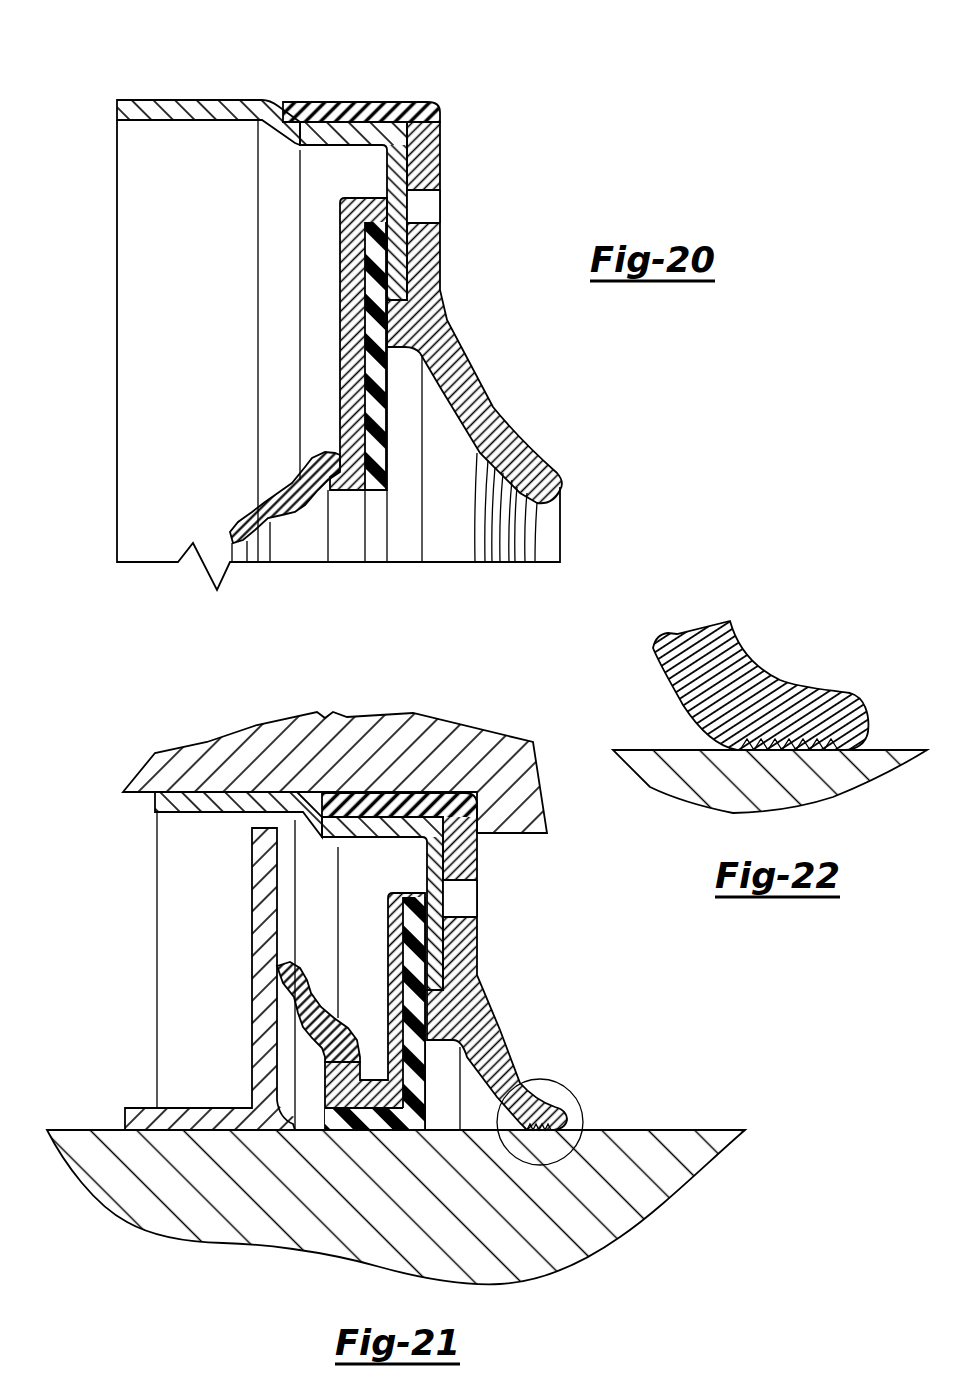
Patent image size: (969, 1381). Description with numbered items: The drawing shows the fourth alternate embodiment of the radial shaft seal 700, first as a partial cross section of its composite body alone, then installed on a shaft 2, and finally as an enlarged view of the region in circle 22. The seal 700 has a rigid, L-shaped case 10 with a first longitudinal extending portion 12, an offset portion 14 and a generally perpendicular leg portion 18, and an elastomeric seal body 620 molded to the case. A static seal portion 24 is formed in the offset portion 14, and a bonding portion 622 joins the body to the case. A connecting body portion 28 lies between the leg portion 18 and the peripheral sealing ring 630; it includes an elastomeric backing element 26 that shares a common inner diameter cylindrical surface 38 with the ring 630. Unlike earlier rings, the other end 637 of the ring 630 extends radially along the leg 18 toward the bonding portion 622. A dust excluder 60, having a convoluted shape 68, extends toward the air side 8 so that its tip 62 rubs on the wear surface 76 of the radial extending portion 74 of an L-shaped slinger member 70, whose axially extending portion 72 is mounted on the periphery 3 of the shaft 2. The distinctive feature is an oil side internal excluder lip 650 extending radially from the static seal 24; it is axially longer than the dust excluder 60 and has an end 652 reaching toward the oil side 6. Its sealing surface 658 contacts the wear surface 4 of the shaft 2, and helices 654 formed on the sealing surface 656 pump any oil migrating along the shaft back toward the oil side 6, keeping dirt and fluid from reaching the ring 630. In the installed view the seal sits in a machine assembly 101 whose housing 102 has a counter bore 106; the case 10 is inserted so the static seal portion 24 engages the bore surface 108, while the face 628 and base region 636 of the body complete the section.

In FIG. 22, the shaft 2 is at (720, 797).
In FIG. 21, the shaft 2 is at (663, 1143).
In FIG. 21, the periphery of the shaft 3 is at (547, 1132).
In FIG. 22, the wear surface 4 is at (680, 750).
In FIG. 21, the wear surface 4 is at (483, 1120).
In FIG. 21, the oil side 6 is at (587, 1018).
In FIG. 21, the air side 8 is at (103, 1008).
In FIG. 20, the case 10 is at (262, 100).
In FIG. 21, the case 10 is at (245, 800).
In FIG. 20, the first longitudinal extending portion 12 is at (345, 133).
In FIG. 21, the first longitudinal extending portion 12 is at (312, 830).
In FIG. 20, the offset portion 14 is at (160, 100).
In FIG. 21, the offset portion 14 is at (157, 807).
In FIG. 20, the leg portion 18 is at (440, 282).
In FIG. 21, the leg portion 18 is at (437, 920).
In FIG. 21, the circle 22 is at (520, 1078).
In FIG. 20, the static seal portion 24 is at (368, 101).
In FIG. 20, the elastomeric backing element 26 is at (338, 452).
In FIG. 20, the connecting body portion 28 is at (340, 300).
In FIG. 20, the inner diameter cylindrical surface 38 is at (340, 312).
In FIG. 21, the inner diameter cylindrical surface 38 is at (355, 1100).
In FIG. 20, the dust excluder 60 is at (230, 534).
In FIG. 21, the dust excluder 60 is at (290, 962).
In FIG. 21, the tip of the dust excluder 62 is at (278, 968).
In FIG. 21, the convoluted shape 68 is at (358, 1037).
In FIG. 21, the slinger member 70 is at (252, 840).
In FIG. 21, the axially extending portion 72 is at (197, 1108).
In FIG. 21, the radial extending portion 74 is at (252, 885).
In FIG. 21, the wear surface 76 is at (288, 950).
In FIG. 21, the machine assembly 101 is at (467, 730).
In FIG. 21, the housing 102 is at (183, 757).
In FIG. 21, the counter bore 106 is at (423, 792).
In FIG. 21, the surface of the bore 108 is at (307, 807).
In FIG. 20, the seal body 620 is at (340, 375).
In FIG. 21, the seal body 620 is at (388, 927).
In FIG. 20, the bonding portion 622 is at (345, 250).
In FIG. 21, the body face 628 is at (388, 940).
In FIG. 20, the peripheral sealing ring 630 is at (392, 460).
In FIG. 21, the peripheral sealing ring 630 is at (407, 1130).
In FIG. 20, the base portion 636 is at (357, 493).
In FIG. 21, the base portion 636 is at (323, 1130).
In FIG. 20, the other end 637 is at (383, 230).
In FIG. 21, the other end 637 is at (405, 915).
In FIG. 20, the oil side internal excluder lip 650 is at (478, 385).
In FIG. 22, the oil side internal excluder lip 650 is at (763, 673).
In FIG. 21, the oil side internal excluder lip 650 is at (500, 1027).
In FIG. 20, the end of the excluder lip 652 is at (565, 488).
In FIG. 22, the end of the excluder lip 652 is at (860, 693).
In FIG. 21, the end of the excluder lip 652 is at (567, 1110).
In FIG. 20, the helices 654 is at (480, 497).
In FIG. 22, the helices 654 is at (803, 745).
In FIG. 21, the helices 654 is at (567, 1132).
In FIG. 21, the sealing surface 656 is at (543, 1132).
In FIG. 20, the sealing surface 658 is at (465, 390).
In FIG. 21, the sealing surface 658 is at (577, 1132).
In FIG. 20, the seal 700 is at (191, 355).
In FIG. 21, the seal 700 is at (592, 944).